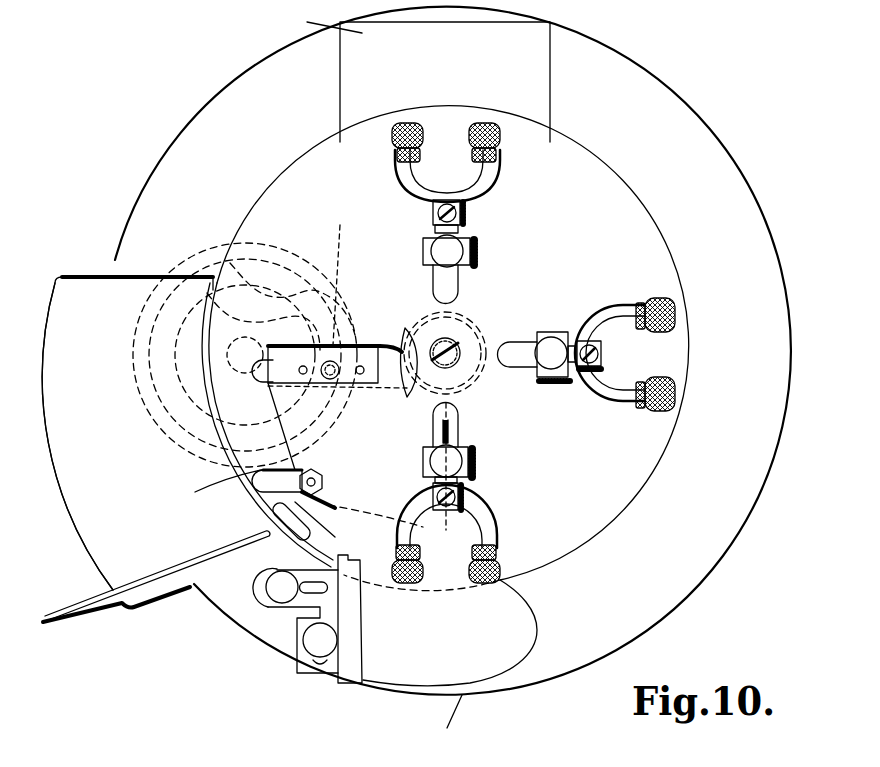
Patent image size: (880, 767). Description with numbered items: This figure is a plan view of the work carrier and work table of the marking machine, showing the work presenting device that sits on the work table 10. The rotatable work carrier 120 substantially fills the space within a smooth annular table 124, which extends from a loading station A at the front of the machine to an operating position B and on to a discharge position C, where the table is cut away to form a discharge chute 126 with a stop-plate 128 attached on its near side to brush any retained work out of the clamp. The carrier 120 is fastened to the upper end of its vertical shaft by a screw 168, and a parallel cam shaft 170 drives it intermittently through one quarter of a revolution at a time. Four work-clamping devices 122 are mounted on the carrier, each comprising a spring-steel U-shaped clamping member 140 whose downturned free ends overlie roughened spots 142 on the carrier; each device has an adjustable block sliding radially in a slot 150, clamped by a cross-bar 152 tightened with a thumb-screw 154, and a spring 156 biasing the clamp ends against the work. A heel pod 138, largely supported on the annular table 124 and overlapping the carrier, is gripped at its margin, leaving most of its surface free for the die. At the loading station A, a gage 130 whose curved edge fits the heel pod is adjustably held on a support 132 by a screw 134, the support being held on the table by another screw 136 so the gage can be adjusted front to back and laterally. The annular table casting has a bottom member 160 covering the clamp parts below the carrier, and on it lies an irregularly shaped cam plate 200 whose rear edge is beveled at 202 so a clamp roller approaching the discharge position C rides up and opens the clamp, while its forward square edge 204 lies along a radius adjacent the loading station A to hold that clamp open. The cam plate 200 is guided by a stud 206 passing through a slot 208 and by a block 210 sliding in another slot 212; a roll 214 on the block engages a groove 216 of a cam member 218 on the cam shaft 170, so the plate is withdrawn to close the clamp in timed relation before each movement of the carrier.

The work table 10 is at (309, 31).
The rotatable work carrier 120 is at (617, 220).
The work-clamping devices 122 is at (463, 203).
The annular table 124 is at (738, 207).
The discharge chute 126 is at (78, 502).
The stop-plate 128 is at (167, 580).
The gage 130 is at (350, 660).
The support 132 is at (310, 600).
The screw 134 is at (320, 647).
The screw 136 is at (273, 587).
The heel pod 138 is at (538, 630).
The U-shaped clamping member 140 is at (483, 528).
The roughened spots 142 is at (495, 565).
The slot 150 is at (458, 433).
The cross-bar 152 is at (472, 243).
The thumb-screw 154 is at (448, 243).
The spring 156 is at (433, 483).
The bottom member 160 is at (273, 507).
The screw 168 is at (447, 343).
The cam shaft 170 is at (230, 347).
The cam plate 200 is at (272, 493).
The beveled edge 202 is at (370, 343).
The forward square edge 204 is at (445, 427).
The stud 206 is at (333, 462).
The slot 208 is at (265, 532).
The block 210 is at (200, 486).
The slot 212 is at (268, 375).
The roll 214 is at (345, 271).
The groove 216 is at (238, 267).
The cam member 218 is at (137, 350).
The loading station A is at (449, 727).
The operating position B is at (467, 77).
The discharge position C is at (103, 427).